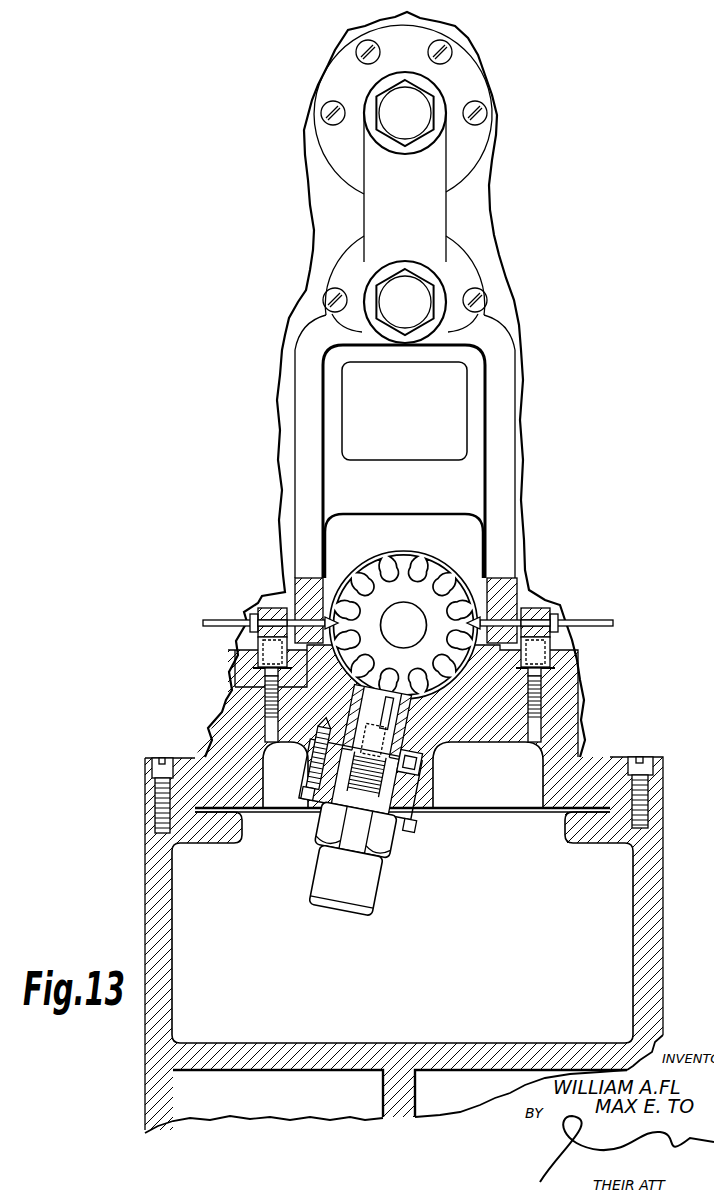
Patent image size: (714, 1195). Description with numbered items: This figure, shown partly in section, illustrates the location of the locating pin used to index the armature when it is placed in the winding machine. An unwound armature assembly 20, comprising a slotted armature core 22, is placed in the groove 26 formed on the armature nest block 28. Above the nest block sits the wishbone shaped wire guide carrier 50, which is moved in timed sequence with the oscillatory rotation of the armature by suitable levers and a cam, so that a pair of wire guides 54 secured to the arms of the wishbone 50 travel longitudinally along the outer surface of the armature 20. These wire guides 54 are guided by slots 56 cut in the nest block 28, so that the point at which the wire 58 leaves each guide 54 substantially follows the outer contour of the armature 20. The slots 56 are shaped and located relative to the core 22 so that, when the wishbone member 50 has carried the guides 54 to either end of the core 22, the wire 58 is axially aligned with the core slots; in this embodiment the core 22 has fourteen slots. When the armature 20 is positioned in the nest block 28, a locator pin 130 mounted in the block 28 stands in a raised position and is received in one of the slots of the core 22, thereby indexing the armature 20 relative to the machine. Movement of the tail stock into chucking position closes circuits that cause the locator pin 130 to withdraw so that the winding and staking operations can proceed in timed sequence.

The armature assembly 20 is at (378, 560).
The slotted armature core 22 is at (431, 560).
The groove 26 is at (458, 677).
The armature nest block 28 is at (565, 695).
The wishbone shaped wire guide carrier 50 is at (503, 417).
The wire guides 54 is at (263, 606).
The slots 56 is at (252, 660).
The wire 58 is at (222, 620).
The locator pin 130 is at (412, 745).